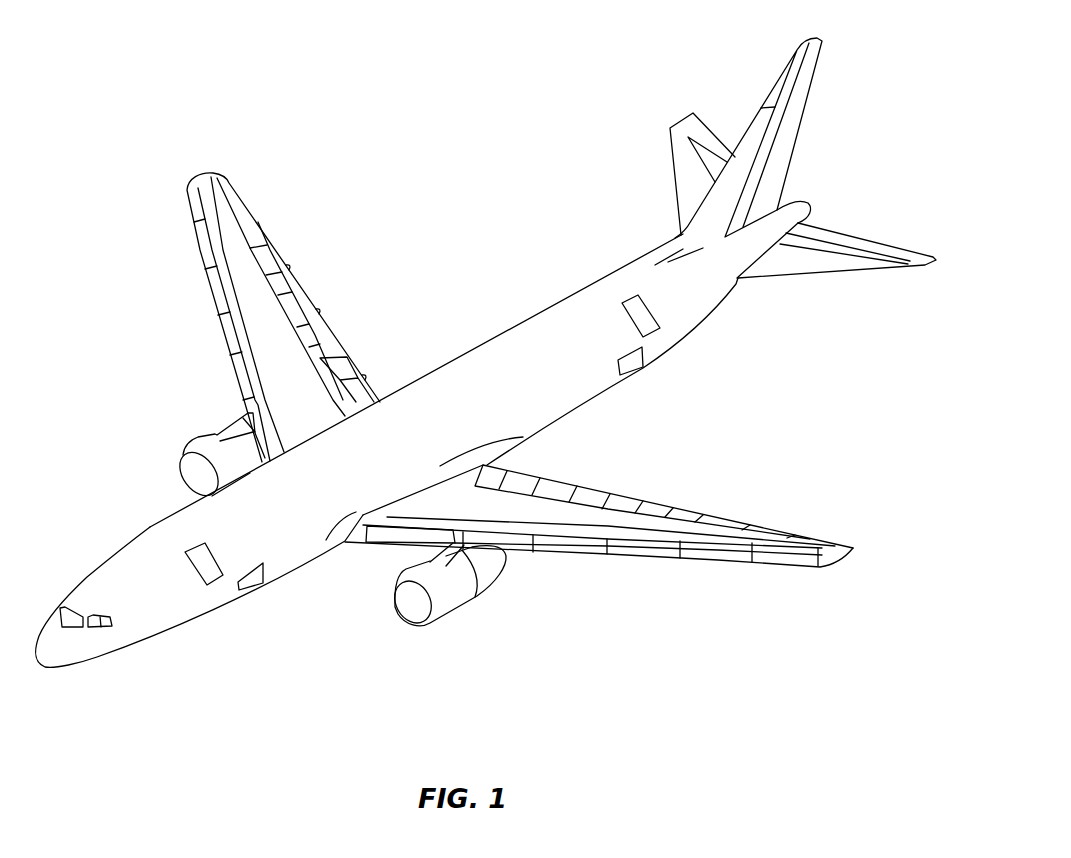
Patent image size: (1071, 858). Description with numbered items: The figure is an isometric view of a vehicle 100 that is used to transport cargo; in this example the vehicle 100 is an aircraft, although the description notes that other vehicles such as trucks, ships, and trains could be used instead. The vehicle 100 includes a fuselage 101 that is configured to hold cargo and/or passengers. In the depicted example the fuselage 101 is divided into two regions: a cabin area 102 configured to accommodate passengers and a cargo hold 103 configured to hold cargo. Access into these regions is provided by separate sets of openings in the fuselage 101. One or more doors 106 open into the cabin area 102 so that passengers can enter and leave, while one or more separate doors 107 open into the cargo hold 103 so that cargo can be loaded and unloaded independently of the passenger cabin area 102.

The vehicle 100 is at (424, 273).
The fuselage 101 is at (468, 390).
The cabin area 102 is at (568, 345).
The cargo hold 103 is at (567, 397).
The doors 106 is at (643, 318).
The doors 107 is at (630, 362).